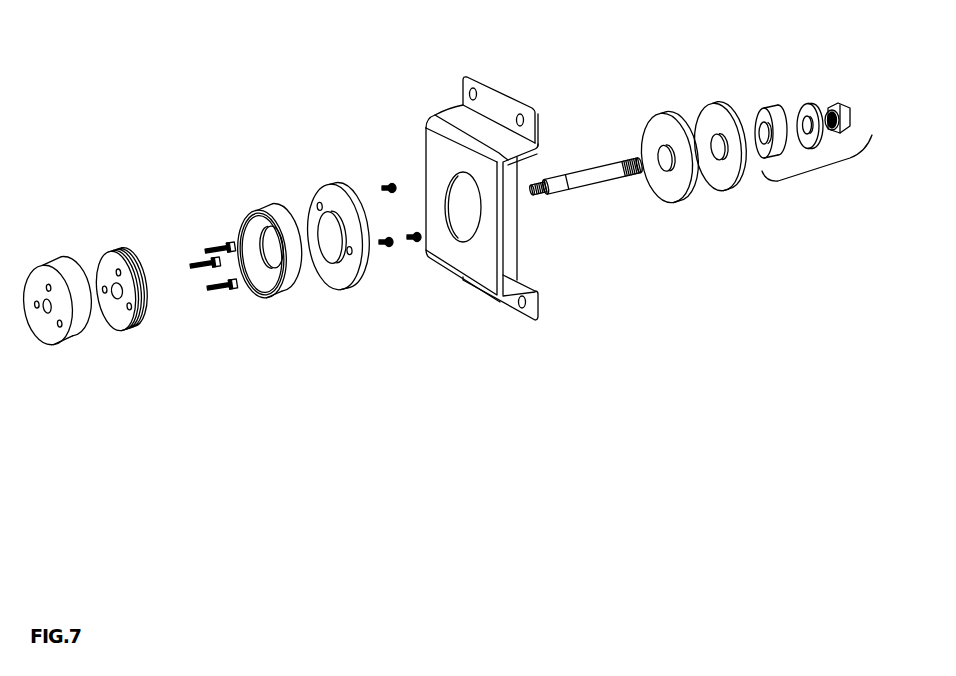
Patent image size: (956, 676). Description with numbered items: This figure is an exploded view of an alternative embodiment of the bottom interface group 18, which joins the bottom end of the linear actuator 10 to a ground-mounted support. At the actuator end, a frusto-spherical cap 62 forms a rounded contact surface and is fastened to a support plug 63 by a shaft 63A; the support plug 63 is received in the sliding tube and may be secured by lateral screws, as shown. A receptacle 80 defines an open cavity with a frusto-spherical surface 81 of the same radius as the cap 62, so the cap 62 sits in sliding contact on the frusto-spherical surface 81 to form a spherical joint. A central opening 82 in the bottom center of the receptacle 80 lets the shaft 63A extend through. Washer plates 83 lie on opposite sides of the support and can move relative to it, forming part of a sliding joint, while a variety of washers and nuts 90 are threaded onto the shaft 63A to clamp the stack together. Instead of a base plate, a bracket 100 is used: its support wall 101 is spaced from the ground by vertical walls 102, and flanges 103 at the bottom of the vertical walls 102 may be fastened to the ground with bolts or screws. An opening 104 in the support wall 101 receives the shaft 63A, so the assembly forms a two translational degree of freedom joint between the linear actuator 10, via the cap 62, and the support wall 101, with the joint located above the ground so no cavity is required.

The linear actuator 10 is at (85, 248).
The bottom interface group 18 is at (424, 70).
The frusto-spherical cap 62 is at (118, 250).
The support plug 63 is at (80, 337).
The shaft 63A is at (583, 193).
The receptacle 80 is at (275, 312).
The frusto-spherical surface 81 is at (247, 226).
The central opening 82 is at (273, 250).
The washer plates 83 is at (337, 291).
The washers and nuts 90 is at (838, 165).
The bracket 100 is at (498, 302).
The support wall 101 is at (440, 243).
The vertical walls 102 is at (517, 224).
The flanges 103 is at (497, 88).
The opening 104 is at (450, 210).